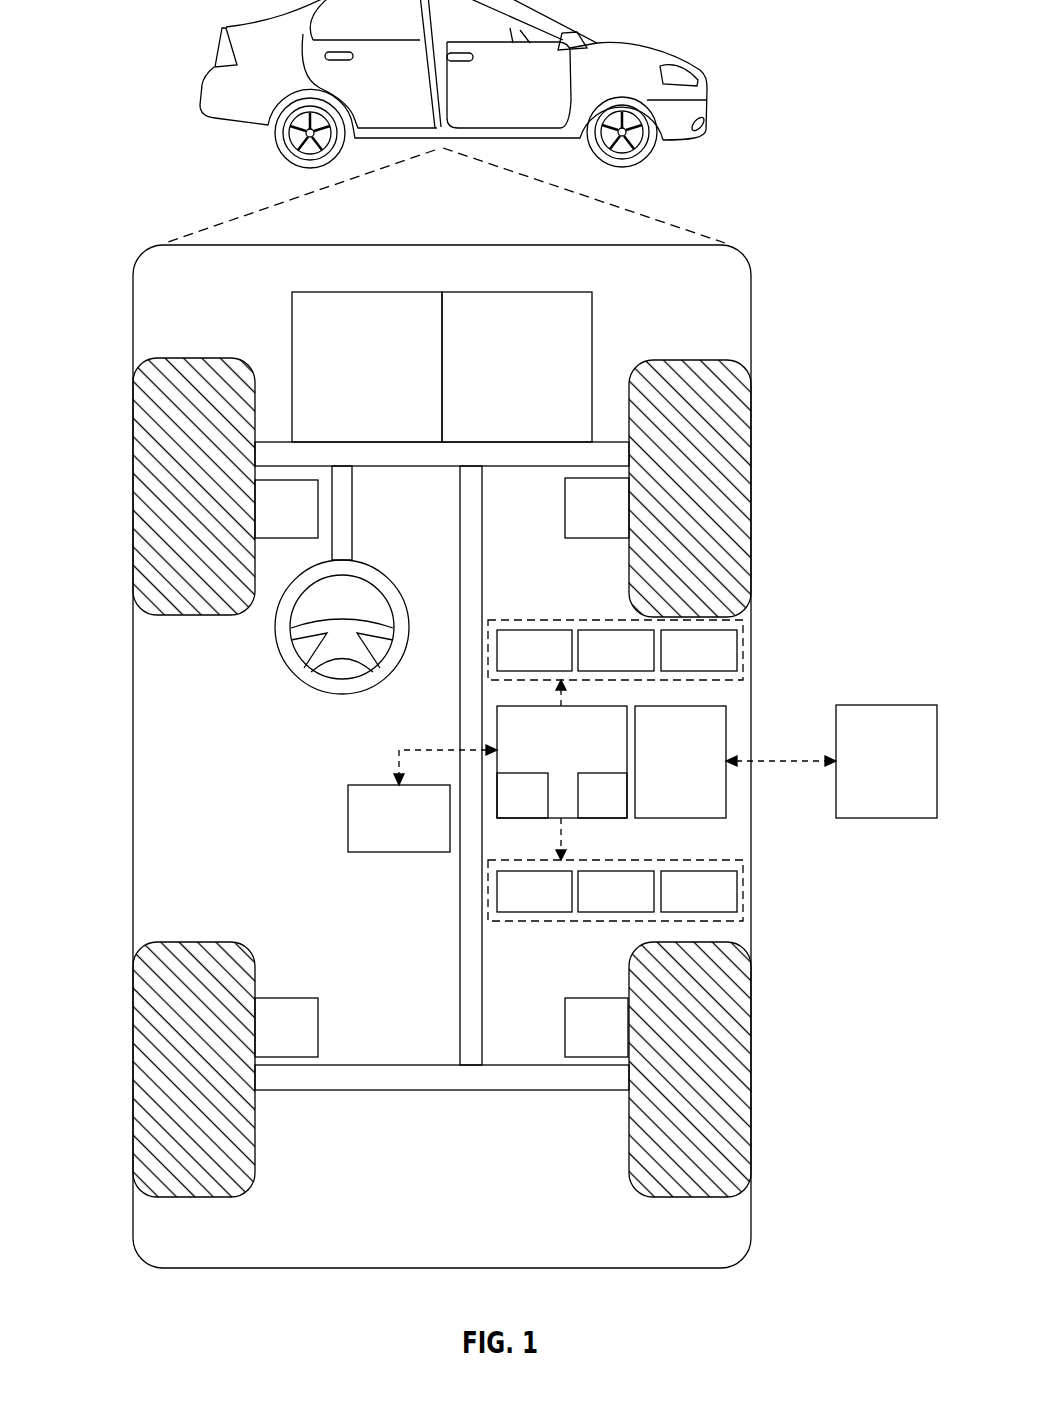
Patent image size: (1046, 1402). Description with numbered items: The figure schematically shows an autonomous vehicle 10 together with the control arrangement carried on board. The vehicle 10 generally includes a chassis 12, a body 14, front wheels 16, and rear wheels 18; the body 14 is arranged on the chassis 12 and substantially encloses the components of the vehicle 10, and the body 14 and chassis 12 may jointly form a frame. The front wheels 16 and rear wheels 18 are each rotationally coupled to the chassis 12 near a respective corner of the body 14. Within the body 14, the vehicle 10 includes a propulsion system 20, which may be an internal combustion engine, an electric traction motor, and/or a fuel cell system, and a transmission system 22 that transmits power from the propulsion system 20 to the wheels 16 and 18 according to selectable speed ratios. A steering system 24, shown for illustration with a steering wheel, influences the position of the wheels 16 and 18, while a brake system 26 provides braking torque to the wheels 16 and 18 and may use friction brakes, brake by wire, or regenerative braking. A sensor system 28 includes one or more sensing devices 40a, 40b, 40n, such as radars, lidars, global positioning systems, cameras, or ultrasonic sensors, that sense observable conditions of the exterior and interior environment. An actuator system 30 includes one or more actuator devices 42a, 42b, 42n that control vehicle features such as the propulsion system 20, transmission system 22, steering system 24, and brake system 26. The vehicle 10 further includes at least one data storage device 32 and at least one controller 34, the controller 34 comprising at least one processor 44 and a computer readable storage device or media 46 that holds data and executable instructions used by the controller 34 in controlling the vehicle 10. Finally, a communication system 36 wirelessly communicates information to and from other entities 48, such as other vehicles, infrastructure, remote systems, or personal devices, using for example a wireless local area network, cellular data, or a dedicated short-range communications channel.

The vehicle 10 is at (212, 62).
The chassis 12 is at (460, 972).
The body 14 is at (132, 715).
The front wheels 16 is at (192, 358).
The rear wheels 18 is at (190, 1197).
The propulsion system 20 is at (380, 381).
The transmission system 22 is at (531, 381).
The steering system 24 is at (356, 531).
The brake system 26 is at (300, 523).
The sensor system 28 is at (615, 633).
The actuator system 30 is at (615, 910).
The data storage device 32 is at (413, 830).
The controller 34 is at (575, 756).
The communication system 36 is at (694, 773).
The sensing device 40a is at (555, 664).
The sensing device 40b is at (637, 664).
The sensing device 40n is at (720, 664).
The actuator device 42a is at (555, 905).
The actuator device 42b is at (637, 905).
The actuator device 42n is at (720, 905).
The processor 44 is at (536, 809).
The computer readable storage device or media 46 is at (616, 809).
The other entities 48 is at (900, 773).